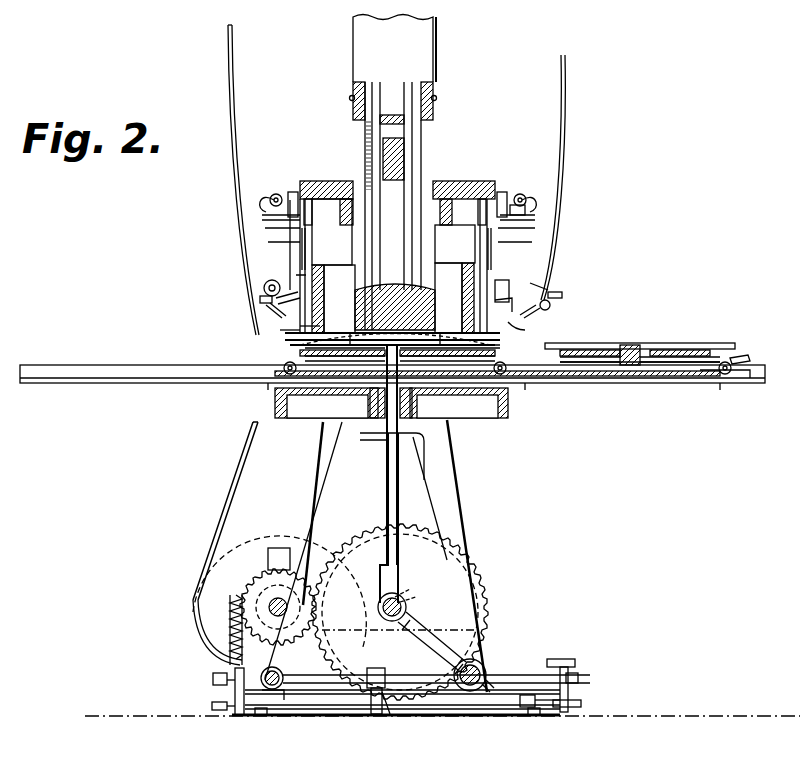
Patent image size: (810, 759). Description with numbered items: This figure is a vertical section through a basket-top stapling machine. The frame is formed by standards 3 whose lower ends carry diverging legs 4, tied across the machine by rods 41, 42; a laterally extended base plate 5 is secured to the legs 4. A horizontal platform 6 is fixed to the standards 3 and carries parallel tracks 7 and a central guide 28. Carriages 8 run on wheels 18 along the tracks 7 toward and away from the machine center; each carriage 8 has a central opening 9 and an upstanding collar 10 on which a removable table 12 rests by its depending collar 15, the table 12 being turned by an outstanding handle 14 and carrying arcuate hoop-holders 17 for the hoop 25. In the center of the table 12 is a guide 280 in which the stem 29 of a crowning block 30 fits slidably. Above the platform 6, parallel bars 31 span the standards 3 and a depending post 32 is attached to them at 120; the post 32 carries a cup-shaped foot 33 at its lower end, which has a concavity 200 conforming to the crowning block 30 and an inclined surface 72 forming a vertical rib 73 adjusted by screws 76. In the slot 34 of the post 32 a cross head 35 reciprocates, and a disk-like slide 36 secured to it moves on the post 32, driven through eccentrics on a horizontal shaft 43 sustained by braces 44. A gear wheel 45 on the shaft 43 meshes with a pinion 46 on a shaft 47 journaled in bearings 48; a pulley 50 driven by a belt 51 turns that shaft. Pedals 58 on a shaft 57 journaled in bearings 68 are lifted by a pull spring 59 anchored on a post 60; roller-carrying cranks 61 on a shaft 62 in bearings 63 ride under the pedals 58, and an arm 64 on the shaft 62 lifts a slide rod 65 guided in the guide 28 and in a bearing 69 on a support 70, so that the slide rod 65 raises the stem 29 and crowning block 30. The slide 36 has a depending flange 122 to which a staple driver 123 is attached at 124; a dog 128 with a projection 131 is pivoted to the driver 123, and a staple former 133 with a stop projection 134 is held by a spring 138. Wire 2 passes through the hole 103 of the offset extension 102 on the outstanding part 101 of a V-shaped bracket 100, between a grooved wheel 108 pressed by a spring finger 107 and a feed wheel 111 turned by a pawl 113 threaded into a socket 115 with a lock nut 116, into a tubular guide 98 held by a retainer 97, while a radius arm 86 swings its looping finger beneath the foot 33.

The wires 2 is at (228, 65).
The standards 3 is at (430, 28).
The diverging legs 4 is at (325, 464).
The base plate 5 is at (462, 716).
The platform 6 is at (280, 418).
The tracks 7 is at (56, 384).
The carriages 8 is at (343, 378).
The central opening 9 is at (378, 402).
The collar 10 is at (700, 382).
The table 12 is at (496, 362).
The handle 14 is at (283, 370).
The depending collar 15 is at (610, 380).
The hoop-holders 17 is at (505, 348).
The wheels 18 is at (268, 383).
The hoop 25 is at (300, 353).
The central guide 28 is at (404, 433).
The stem 29 is at (625, 402).
The crowning block 30 is at (657, 328).
The parallel bars 31 is at (353, 90).
The post 32 is at (365, 136).
The cup-shaped foot 33 is at (462, 262).
The longitudinal slot 34 is at (415, 75).
The cross head 35 is at (395, 152).
The slide 36 is at (448, 181).
The rod 41 is at (272, 690).
The rod 42 is at (478, 670).
The horizontal shaft 43 is at (396, 597).
The braces 44 is at (424, 650).
The gear wheel 45 is at (450, 532).
The pinion 46 is at (256, 578).
The shaft 47 is at (268, 600).
The bearings 48 is at (280, 547).
The pulley 50 is at (262, 530).
The belt 51 is at (232, 471).
The shaft 57 is at (212, 705).
The pedals 58 is at (213, 682).
The pull spring 59 is at (230, 632).
The post 60 is at (232, 600).
The roller-carrying cranks 61 is at (264, 676).
The shaft 62 is at (312, 712).
The bearings 63 is at (260, 716).
The arm 64 is at (376, 714).
The slide rod 65 is at (388, 496).
The bearings 68 is at (522, 695).
The bearing 69 is at (390, 714).
The support 70 is at (440, 684).
The inclined surface 72 is at (320, 270).
The vertical rib 73 is at (320, 303).
The screws 76 is at (298, 275).
The radius arm 86 is at (276, 320).
The retainer 97 is at (300, 326).
The tubular guide 98 is at (280, 330).
The V-shaped bracket 100 is at (504, 280).
The outstanding part 101 is at (265, 284).
The offset extension 102 is at (260, 298).
The hole 103 is at (548, 286).
The spring finger 107 is at (268, 310).
The grooved wheel 108 is at (516, 328).
The feed wheel 111 is at (282, 285).
The pawl 113 is at (285, 230).
The socket 115 is at (272, 196).
The lock nut 116 is at (296, 192).
The attachment point 120 is at (350, 98).
The depending flange 122 is at (466, 181).
The staple driver 123 is at (330, 195).
The attachment point 124 is at (310, 190).
The dog 128 is at (540, 212).
The projection 131 is at (262, 216).
The staple former 133 is at (305, 250).
The stop projection 134 is at (300, 243).
The spring 138 is at (264, 205).
The concavity 200 is at (395, 308).
The guide 280 is at (455, 298).